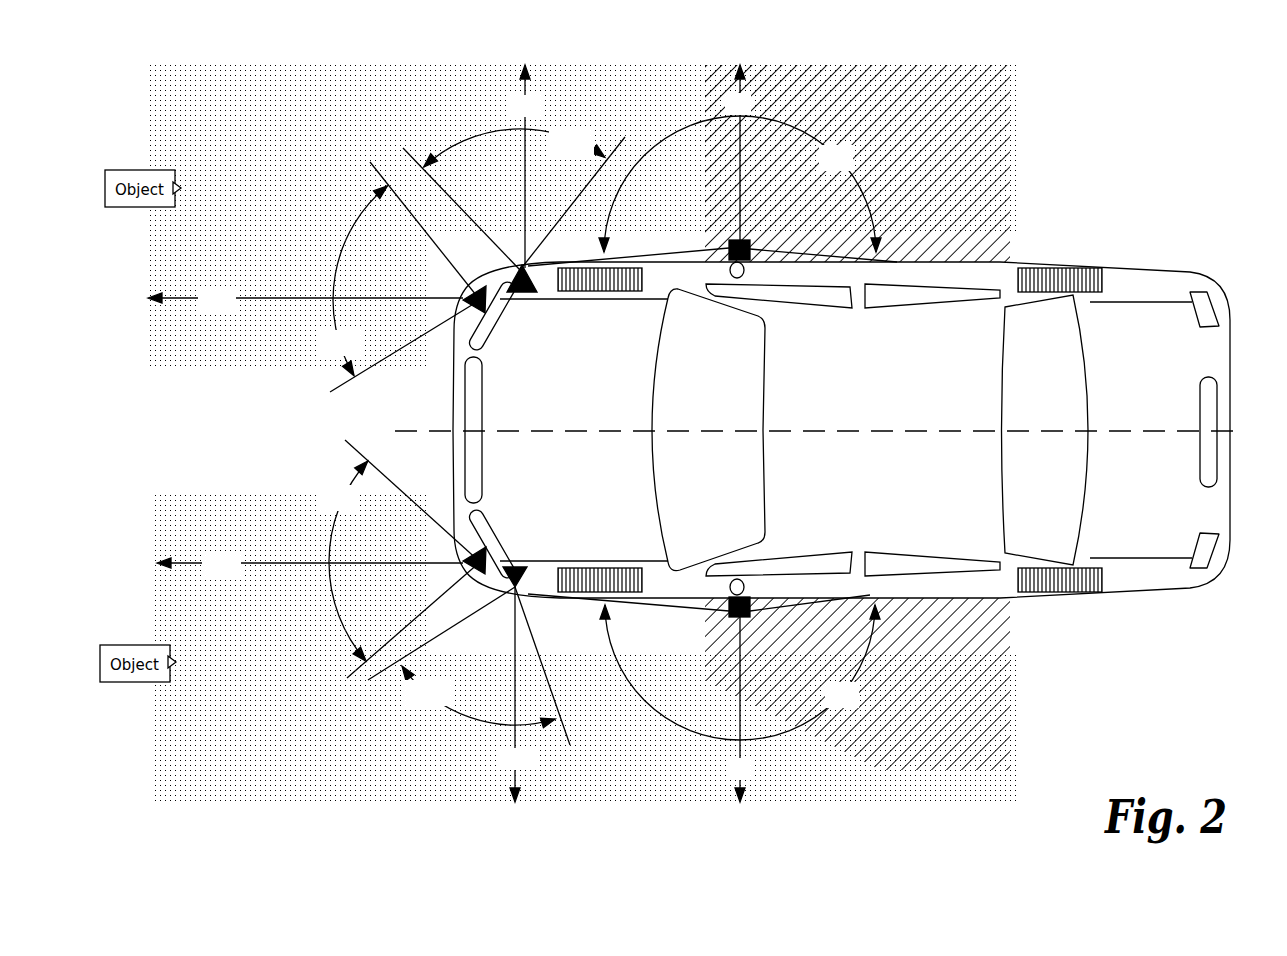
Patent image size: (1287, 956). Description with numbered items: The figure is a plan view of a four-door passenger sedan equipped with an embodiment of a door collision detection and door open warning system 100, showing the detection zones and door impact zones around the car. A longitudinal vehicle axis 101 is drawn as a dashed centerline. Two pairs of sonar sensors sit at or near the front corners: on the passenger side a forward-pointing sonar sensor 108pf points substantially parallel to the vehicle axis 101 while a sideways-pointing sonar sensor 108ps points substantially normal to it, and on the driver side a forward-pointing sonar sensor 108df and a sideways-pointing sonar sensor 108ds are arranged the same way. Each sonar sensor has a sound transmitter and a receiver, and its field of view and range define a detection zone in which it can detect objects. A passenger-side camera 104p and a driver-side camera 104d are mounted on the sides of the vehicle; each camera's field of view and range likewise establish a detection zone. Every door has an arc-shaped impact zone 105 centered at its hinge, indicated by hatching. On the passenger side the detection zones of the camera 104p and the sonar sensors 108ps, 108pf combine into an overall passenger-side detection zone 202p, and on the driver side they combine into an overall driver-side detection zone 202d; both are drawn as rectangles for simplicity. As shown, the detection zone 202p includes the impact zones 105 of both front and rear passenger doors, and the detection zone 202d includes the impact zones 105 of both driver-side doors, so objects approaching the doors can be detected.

The DCD/DOW system 100 is at (1120, 83).
The vehicle axis 101 is at (839, 430).
The passenger-side DCD camera 104p is at (752, 248).
The driver-side DCD camera 104d is at (748, 615).
The impact zone 105 is at (720, 180).
The passenger-side sideways-pointing sonar sensor 108ps is at (530, 295).
The passenger-side forward-pointing sonar sensor 108pf is at (486, 310).
The driver-side forward-pointing sonar sensor 108df is at (486, 550).
The driver-side sideways-pointing sonar sensor 108ds is at (516, 565).
The passenger-side detection zone 202p is at (584, 217).
The driver-side detection zone 202d is at (587, 647).